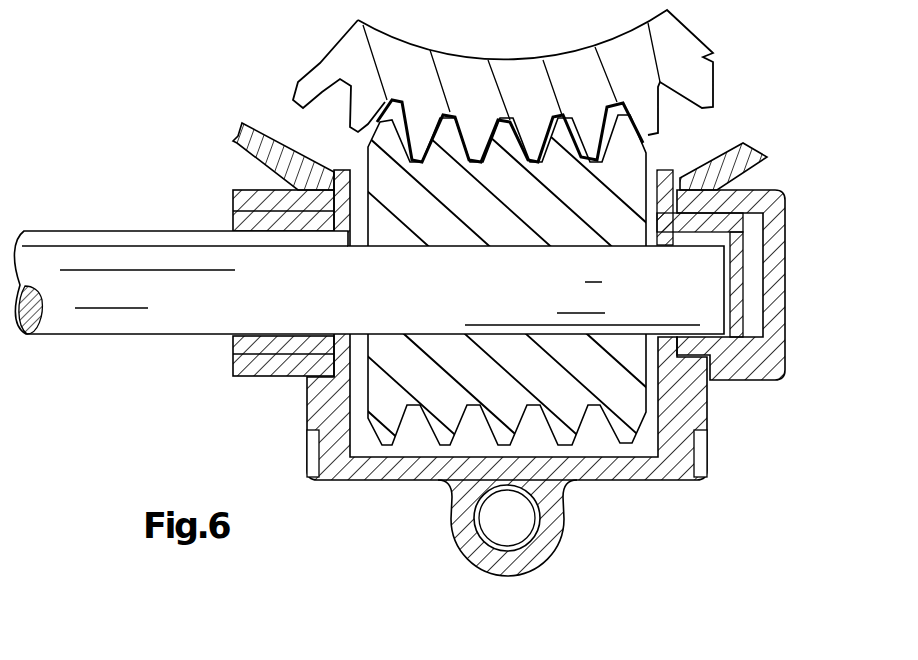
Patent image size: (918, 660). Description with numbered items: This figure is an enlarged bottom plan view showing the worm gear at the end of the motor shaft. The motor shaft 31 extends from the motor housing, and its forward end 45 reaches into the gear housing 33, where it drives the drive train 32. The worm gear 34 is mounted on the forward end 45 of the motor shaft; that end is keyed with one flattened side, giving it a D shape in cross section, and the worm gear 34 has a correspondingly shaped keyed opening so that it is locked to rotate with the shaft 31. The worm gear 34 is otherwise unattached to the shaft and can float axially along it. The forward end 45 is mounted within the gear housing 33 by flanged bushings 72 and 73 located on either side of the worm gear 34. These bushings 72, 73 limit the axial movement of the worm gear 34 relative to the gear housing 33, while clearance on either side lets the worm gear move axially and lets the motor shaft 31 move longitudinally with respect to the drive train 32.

The motor shaft 31 is at (205, 312).
The drive train 32 is at (678, 131).
The gear housing 33 is at (268, 163).
The worm gear 34 is at (623, 430).
The forward end of the motor shaft 45 is at (710, 295).
The flanged bushing 72 is at (295, 347).
The flanged bushing 73 is at (717, 337).